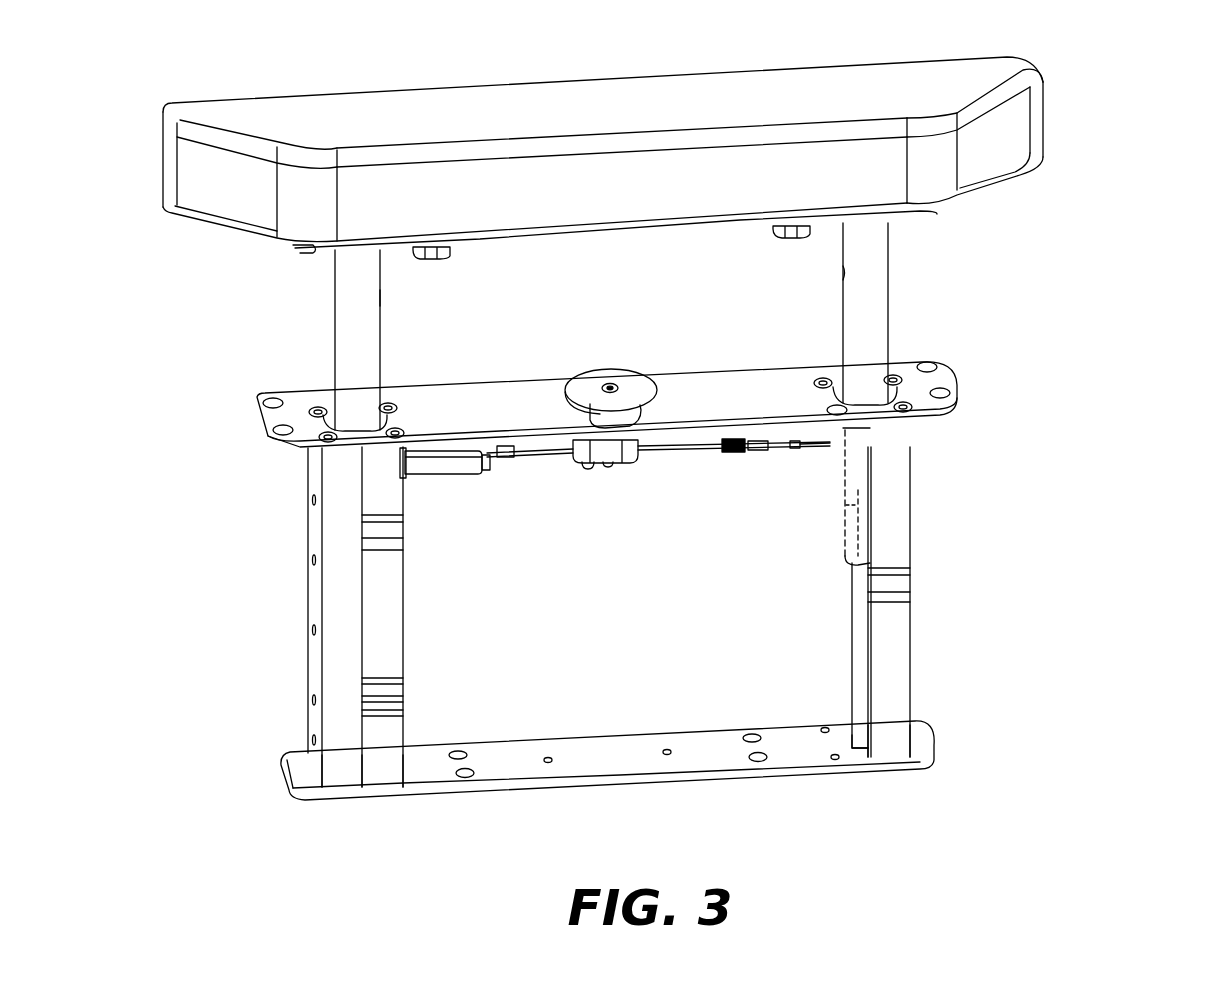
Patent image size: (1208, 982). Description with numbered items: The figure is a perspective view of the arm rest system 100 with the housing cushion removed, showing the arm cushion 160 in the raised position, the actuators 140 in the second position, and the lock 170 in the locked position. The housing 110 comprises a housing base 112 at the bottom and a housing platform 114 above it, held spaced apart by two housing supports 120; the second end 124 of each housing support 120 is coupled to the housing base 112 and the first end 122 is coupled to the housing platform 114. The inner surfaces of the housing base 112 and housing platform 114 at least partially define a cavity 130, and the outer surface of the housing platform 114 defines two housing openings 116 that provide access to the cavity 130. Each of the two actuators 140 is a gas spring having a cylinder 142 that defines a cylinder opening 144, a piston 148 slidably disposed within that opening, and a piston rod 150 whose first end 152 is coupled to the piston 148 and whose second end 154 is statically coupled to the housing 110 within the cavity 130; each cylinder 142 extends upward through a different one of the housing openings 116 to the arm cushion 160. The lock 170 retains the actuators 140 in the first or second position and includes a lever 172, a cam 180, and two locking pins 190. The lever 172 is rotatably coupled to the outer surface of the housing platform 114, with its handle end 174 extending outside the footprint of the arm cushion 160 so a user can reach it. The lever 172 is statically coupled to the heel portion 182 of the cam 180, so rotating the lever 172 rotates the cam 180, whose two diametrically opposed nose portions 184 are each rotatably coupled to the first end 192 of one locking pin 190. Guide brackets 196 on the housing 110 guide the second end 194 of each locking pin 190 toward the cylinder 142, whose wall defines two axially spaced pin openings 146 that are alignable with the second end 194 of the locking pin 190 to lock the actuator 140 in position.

The arm rest system 100 is at (1119, 85).
The housing 110 is at (607, 800).
The housing base 112 is at (517, 792).
The housing platform 114 is at (630, 384).
The housing openings 116 is at (399, 404).
The housing supports 120 is at (598, 646).
The first end 122 is at (335, 472).
The second end 124 is at (340, 775).
The cavity 130 is at (627, 657).
The actuators 140 is at (609, 331).
The cylinder 142 is at (343, 385).
The cylinder opening 144 is at (858, 457).
The pin openings 146 is at (394, 298).
The piston 148 is at (874, 513).
The piston rod 150 is at (811, 655).
The first end 152 is at (872, 497).
The second end 154 is at (858, 735).
The arm cushion 160 is at (676, 100).
The lock 170 is at (589, 360).
The lever 172 is at (634, 382).
The handle end 174 is at (604, 419).
The cam 180 is at (615, 505).
The heel portion 182 is at (604, 452).
The nose portions 184 is at (582, 452).
The locking pins 190 is at (506, 473).
The first end 192 is at (684, 448).
The second end 194 is at (830, 447).
The guide brackets 196 is at (437, 481).